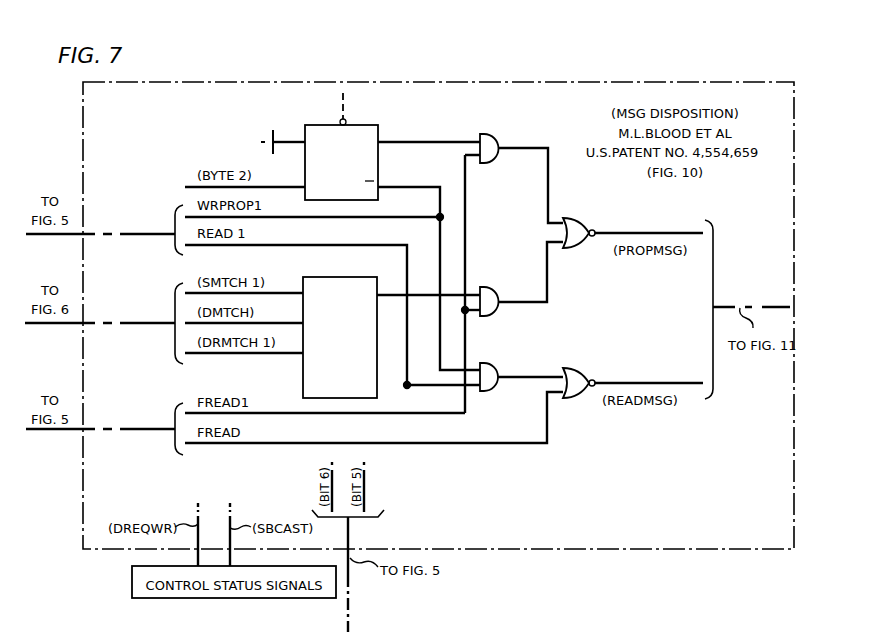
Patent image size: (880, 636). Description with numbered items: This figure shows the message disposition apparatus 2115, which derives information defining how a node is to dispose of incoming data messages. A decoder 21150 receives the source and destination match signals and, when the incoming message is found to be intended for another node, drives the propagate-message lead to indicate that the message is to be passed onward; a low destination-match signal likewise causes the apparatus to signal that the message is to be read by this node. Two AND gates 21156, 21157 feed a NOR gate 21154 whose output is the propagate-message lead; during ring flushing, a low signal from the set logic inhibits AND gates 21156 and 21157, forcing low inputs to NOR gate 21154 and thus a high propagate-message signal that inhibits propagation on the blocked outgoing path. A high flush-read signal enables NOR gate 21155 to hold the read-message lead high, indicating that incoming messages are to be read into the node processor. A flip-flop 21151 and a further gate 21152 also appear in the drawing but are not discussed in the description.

The message disposition apparatus 2115 is at (655, 83).
The flip-flop 21151 is at (368, 124).
The decoder 21150 is at (342, 277).
The AND gate 21156 is at (503, 141).
The AND gate 21157 is at (504, 293).
The AND gate 21152 is at (506, 370).
The NOR gate 21154 is at (591, 228).
The NOR gate 21155 is at (594, 378).